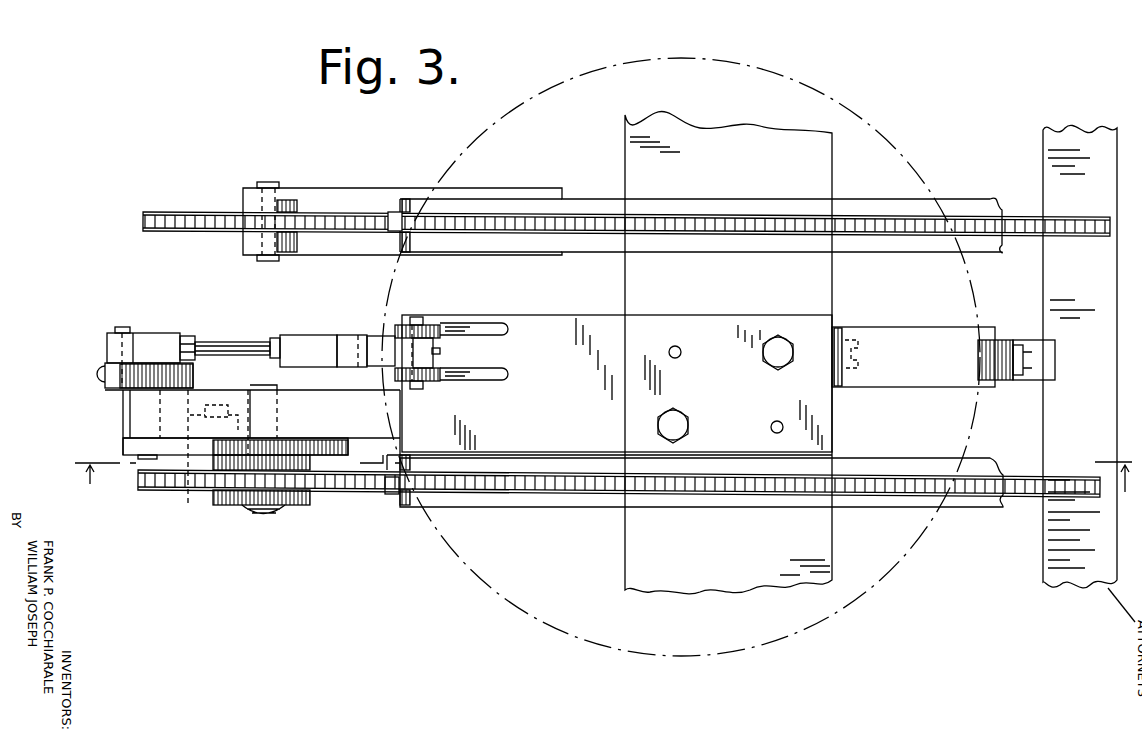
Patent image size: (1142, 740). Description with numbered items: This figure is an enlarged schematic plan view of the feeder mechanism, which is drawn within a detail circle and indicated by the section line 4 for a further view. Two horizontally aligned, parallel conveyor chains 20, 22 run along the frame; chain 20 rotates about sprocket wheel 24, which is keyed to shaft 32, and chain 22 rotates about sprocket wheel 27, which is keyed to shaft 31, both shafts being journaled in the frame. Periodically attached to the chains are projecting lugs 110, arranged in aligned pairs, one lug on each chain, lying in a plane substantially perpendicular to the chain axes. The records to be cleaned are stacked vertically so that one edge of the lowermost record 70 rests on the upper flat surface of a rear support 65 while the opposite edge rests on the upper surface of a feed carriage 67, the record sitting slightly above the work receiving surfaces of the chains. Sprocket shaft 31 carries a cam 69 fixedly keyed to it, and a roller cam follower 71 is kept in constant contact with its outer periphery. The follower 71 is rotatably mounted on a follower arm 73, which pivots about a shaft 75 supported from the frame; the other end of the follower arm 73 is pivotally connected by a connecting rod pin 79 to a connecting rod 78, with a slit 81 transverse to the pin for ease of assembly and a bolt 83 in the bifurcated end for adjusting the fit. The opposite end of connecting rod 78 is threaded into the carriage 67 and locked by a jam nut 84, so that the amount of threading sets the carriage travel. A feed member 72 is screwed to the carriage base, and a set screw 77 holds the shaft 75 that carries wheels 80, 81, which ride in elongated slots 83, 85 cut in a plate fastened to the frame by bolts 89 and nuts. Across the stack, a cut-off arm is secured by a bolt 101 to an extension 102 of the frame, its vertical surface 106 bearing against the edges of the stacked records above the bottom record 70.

The section line 4- 4 is at (605, 490).
The conveyor chain 20 is at (140, 222).
The conveyor chain 22 is at (140, 480).
The sprocket wheel 24 is at (197, 212).
The sprocket wheel 27 is at (170, 492).
The shaft 31 is at (262, 516).
The shaft 32 is at (268, 182).
The rear support 65 is at (876, 388).
The feed carriage 67 is at (310, 335).
The cam 69 is at (338, 470).
The lowermost record 70 is at (856, 118).
The roller cam follower 71 is at (195, 461).
The feed member 72 is at (347, 335).
The follower arm 73 is at (125, 383).
The shaft 75 is at (140, 460).
The set screw 77 is at (440, 352).
The connecting rod 78 is at (168, 333).
The connecting rod pin 79 is at (122, 327).
The wheel 80 is at (397, 328).
The wheel 81 is at (410, 372).
The elongated slot 83 is at (490, 380).
The jam nut 84 is at (272, 338).
The elongated slot 85 is at (497, 328).
The bolt 89 is at (680, 420).
The bolt 101 is at (1022, 342).
The extension 102 is at (1050, 406).
The vertical surface 106 is at (978, 358).
The projecting lug 110 is at (397, 210).